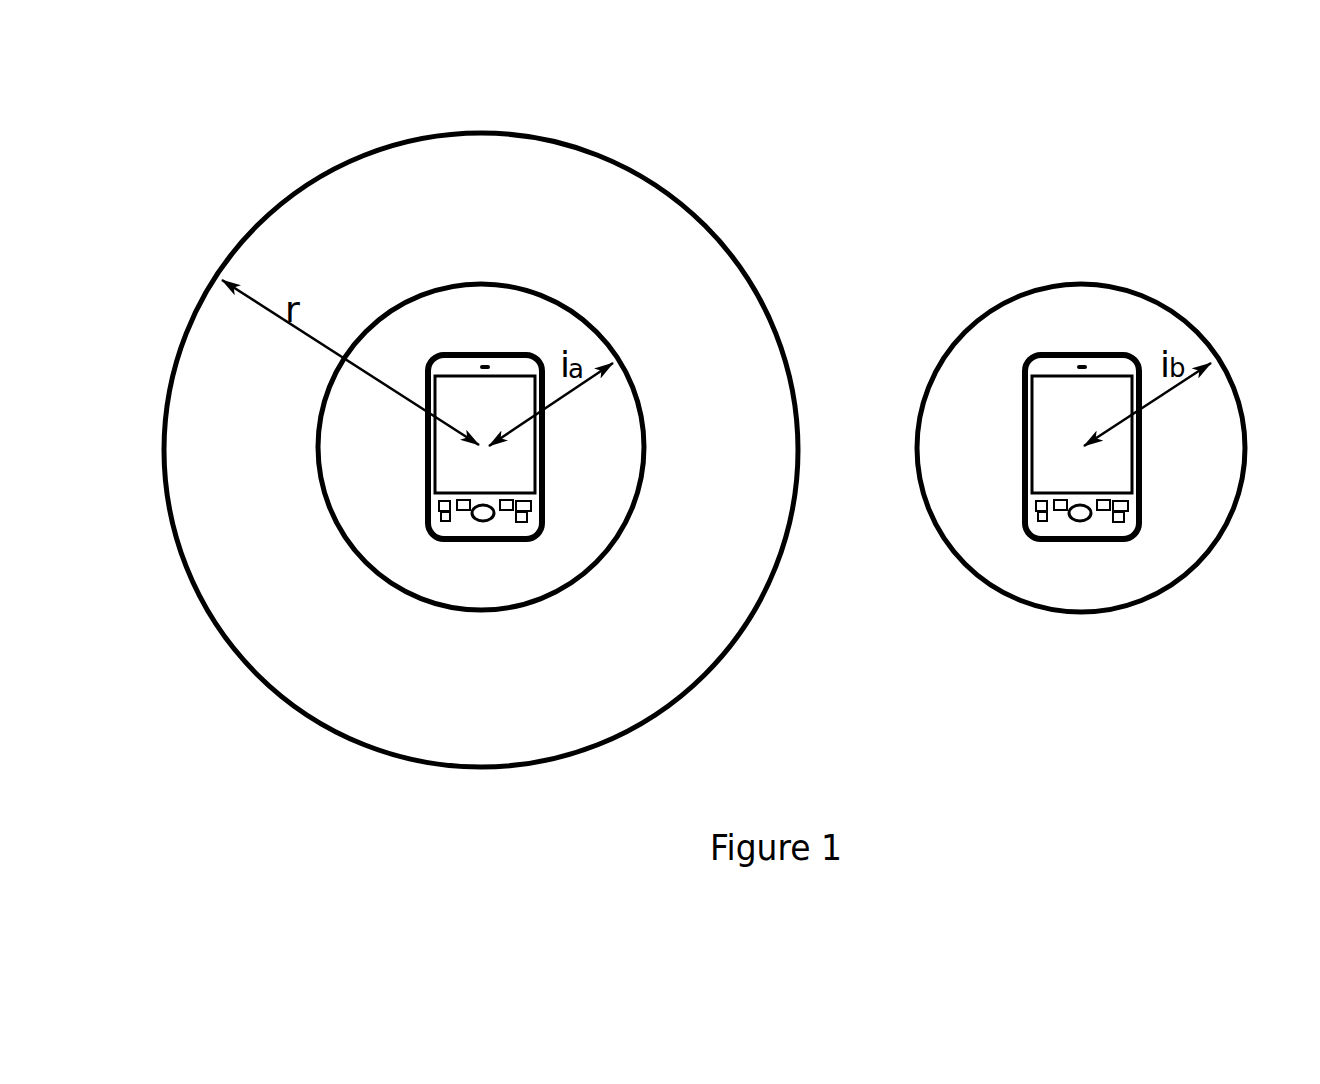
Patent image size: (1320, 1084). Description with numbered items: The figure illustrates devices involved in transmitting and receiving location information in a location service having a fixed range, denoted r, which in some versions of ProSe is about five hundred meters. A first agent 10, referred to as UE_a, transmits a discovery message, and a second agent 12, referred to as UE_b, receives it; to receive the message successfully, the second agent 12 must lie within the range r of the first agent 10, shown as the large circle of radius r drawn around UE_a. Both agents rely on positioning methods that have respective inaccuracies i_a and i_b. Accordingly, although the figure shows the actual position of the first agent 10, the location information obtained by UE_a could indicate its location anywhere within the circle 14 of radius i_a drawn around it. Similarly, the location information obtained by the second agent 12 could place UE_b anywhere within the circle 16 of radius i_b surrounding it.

The first agent 10 is at (430, 495).
The second agent 12 is at (1023, 495).
The circle 14 is at (580, 315).
The circle 16 is at (1177, 317).